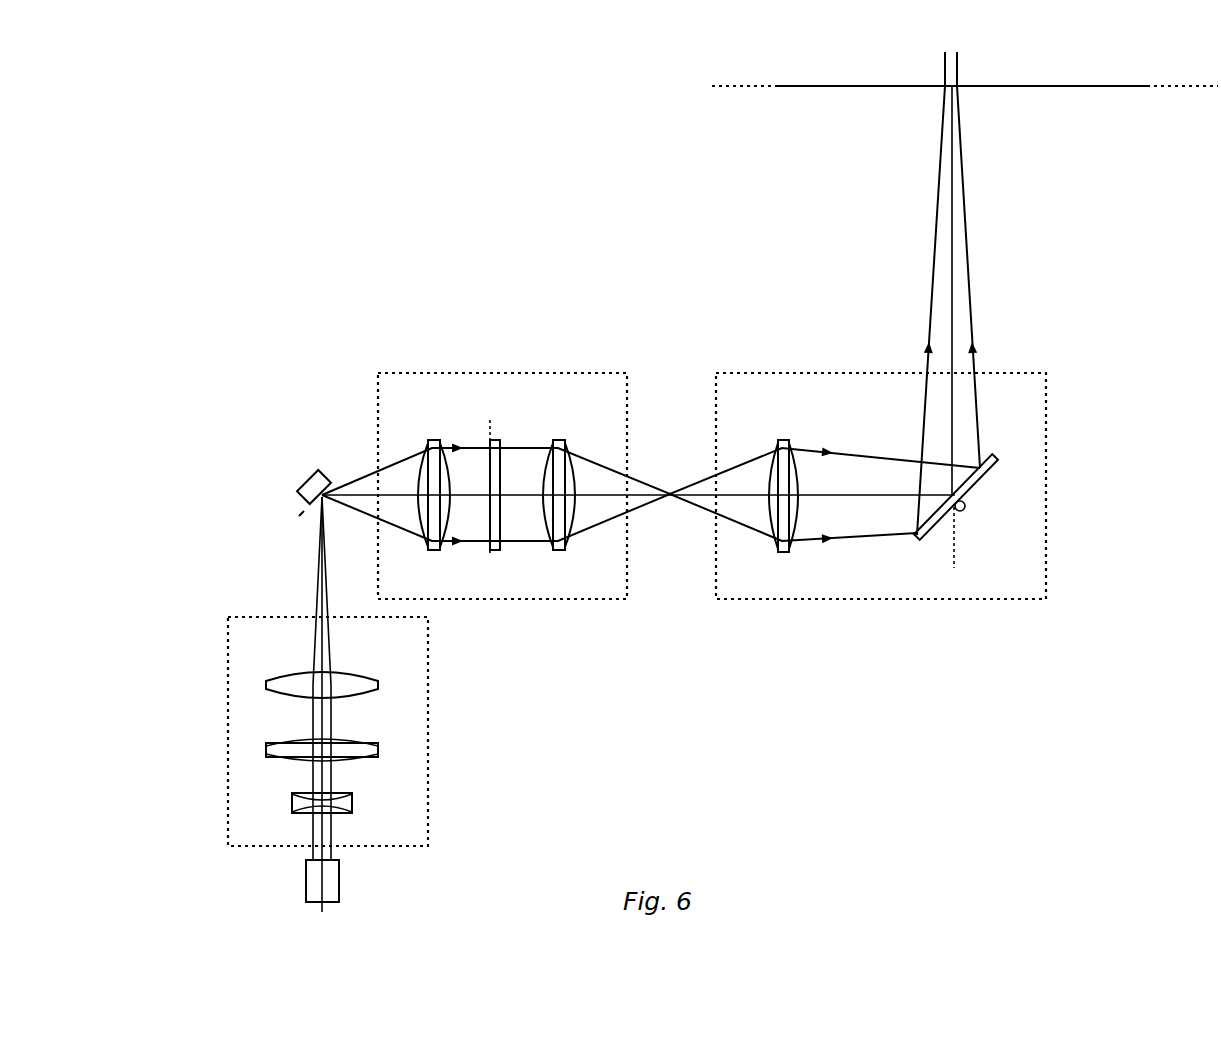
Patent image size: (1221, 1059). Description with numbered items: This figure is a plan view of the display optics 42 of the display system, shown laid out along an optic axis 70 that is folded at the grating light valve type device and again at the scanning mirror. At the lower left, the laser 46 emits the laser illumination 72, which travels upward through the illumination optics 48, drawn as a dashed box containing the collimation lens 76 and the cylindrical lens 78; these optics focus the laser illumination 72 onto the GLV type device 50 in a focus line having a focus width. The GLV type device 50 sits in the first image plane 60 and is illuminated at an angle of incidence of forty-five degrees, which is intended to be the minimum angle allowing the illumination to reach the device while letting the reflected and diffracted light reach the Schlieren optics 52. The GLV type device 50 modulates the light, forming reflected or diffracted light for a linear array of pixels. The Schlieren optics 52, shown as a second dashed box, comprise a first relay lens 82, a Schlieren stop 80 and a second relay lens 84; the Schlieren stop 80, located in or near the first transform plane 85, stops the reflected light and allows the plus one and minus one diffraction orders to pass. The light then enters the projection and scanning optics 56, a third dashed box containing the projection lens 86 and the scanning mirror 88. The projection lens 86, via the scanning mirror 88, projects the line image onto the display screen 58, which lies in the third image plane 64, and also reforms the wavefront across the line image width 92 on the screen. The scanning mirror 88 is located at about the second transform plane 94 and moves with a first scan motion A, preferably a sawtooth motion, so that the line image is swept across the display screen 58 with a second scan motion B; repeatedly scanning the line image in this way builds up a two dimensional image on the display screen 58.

The display optics 42 is at (366, 329).
The laser 46 is at (339, 880).
The illumination optics 48 is at (228, 733).
The grating light valve type device 50 is at (298, 477).
The Schlieren optics 52 is at (500, 373).
The projection and scanning optics 56 is at (813, 372).
The display screen 58 is at (843, 86).
The first image plane 60 is at (336, 474).
The third image plane 64 is at (740, 86).
The optic axis 70 is at (322, 910).
The laser illumination 72 is at (315, 585).
The collimation lens 76 is at (378, 745).
The cylindrical lens 78 is at (378, 687).
The Schlieren stop 80 is at (495, 442).
The first relay lens 82 is at (430, 442).
The second relay lens 84 is at (558, 442).
The first transform plane 85 is at (352, 800).
The projection lens 86 is at (782, 440).
The scanning mirror 88 is at (995, 456).
The line image width 92 is at (908, 68).
The second transform plane 94 is at (954, 552).
The first scan motion A is at (958, 534).
The second scan motion B is at (905, 200).